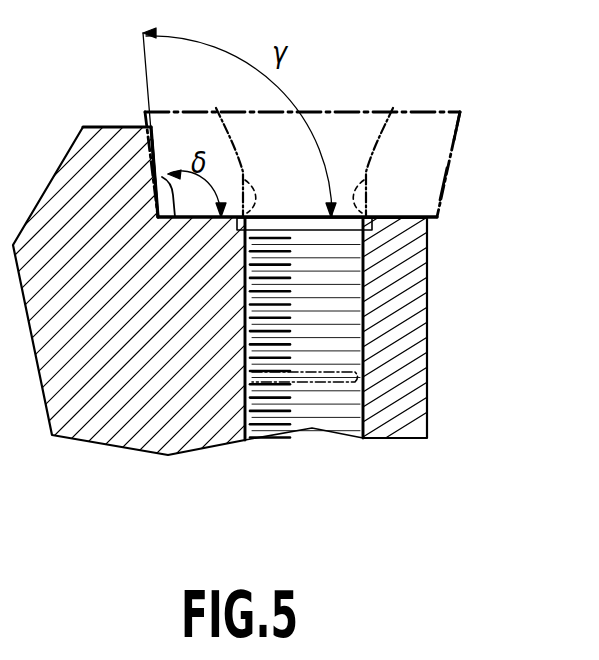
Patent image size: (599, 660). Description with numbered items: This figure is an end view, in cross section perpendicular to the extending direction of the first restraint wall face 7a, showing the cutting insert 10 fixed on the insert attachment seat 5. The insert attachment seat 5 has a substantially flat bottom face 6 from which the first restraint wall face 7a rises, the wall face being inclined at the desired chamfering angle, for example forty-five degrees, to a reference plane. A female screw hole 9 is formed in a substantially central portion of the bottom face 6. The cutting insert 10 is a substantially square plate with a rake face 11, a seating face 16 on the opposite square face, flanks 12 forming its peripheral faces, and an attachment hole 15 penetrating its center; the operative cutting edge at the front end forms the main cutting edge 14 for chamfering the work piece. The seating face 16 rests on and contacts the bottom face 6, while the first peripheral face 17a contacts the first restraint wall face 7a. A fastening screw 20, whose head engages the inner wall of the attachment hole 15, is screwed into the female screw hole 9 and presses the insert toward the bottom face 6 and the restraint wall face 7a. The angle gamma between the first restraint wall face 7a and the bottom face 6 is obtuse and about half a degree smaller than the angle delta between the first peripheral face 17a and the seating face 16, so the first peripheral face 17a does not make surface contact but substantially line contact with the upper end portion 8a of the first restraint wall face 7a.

The insert attachment seat 5 is at (220, 158).
The bottom face 6 is at (403, 217).
The first restraint wall face 7a is at (162, 177).
The upper end portion 8a is at (159, 163).
The female screw hole 9 is at (360, 350).
The cutting insert 10 is at (470, 142).
The rake face 11 is at (427, 111).
The flank 12 is at (455, 163).
The main cutting edge 14 is at (462, 111).
The attachment hole 15 is at (386, 126).
The seating face 16 is at (390, 219).
The first peripheral face 17a is at (158, 189).
The fastening screw 20 is at (358, 118).